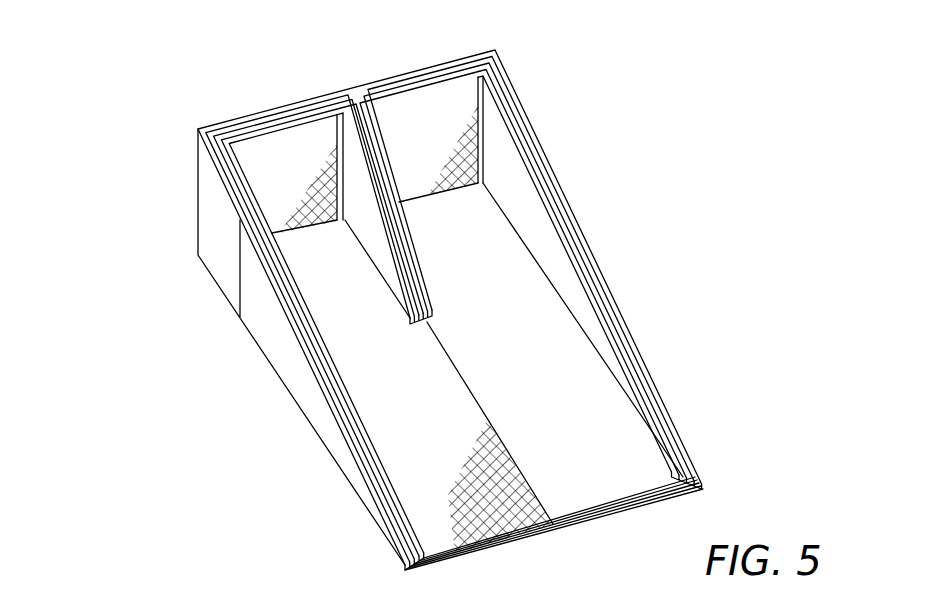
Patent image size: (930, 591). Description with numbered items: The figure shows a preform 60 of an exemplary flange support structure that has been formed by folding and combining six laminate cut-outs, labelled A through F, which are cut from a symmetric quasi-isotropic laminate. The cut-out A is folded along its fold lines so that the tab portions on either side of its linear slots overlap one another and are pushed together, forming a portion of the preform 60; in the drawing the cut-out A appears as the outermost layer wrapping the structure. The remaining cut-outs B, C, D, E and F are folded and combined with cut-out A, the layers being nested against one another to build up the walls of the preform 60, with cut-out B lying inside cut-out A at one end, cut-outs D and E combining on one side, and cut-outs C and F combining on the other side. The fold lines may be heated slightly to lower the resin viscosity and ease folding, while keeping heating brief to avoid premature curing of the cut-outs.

The preform 60 is at (135, 271).
The A cut-out A is at (367, 94).
The B cut-out B is at (286, 108).
The C cut-out C is at (555, 218).
The D cut-out D is at (298, 292).
The E cut-out E is at (310, 323).
The F cut-out F is at (577, 241).